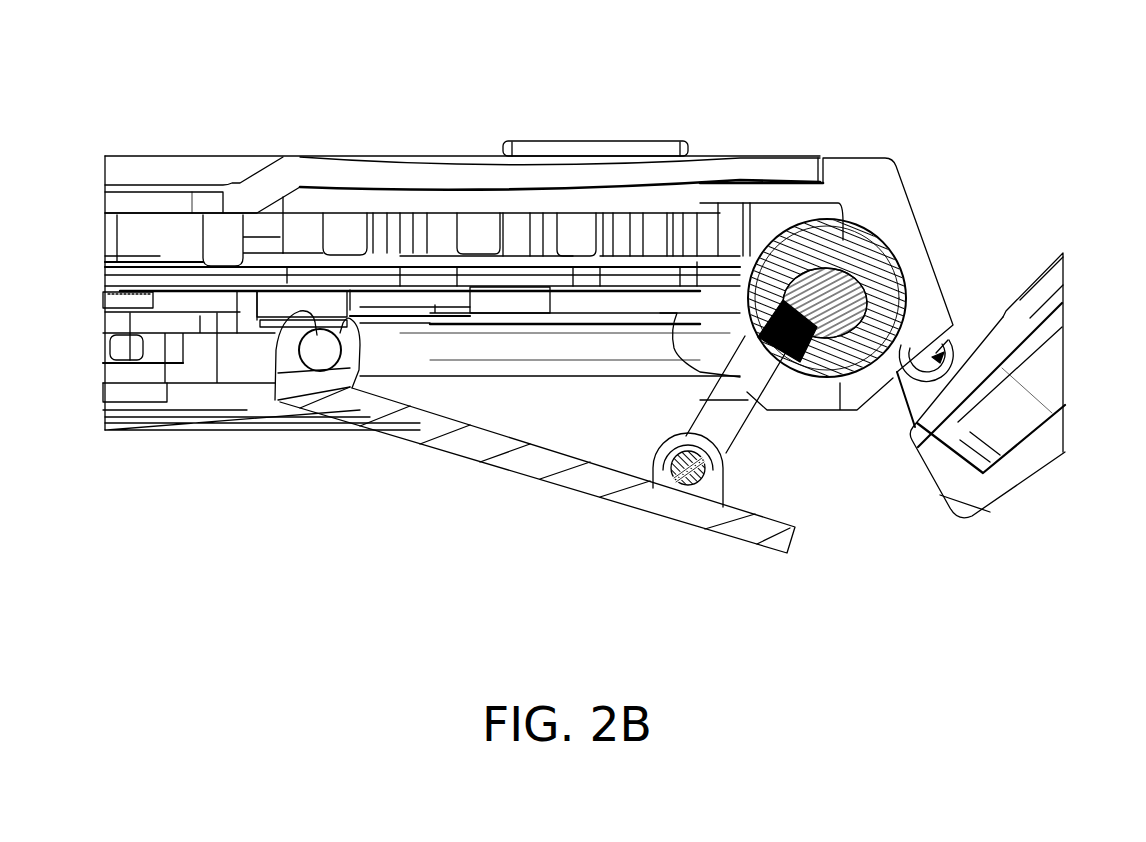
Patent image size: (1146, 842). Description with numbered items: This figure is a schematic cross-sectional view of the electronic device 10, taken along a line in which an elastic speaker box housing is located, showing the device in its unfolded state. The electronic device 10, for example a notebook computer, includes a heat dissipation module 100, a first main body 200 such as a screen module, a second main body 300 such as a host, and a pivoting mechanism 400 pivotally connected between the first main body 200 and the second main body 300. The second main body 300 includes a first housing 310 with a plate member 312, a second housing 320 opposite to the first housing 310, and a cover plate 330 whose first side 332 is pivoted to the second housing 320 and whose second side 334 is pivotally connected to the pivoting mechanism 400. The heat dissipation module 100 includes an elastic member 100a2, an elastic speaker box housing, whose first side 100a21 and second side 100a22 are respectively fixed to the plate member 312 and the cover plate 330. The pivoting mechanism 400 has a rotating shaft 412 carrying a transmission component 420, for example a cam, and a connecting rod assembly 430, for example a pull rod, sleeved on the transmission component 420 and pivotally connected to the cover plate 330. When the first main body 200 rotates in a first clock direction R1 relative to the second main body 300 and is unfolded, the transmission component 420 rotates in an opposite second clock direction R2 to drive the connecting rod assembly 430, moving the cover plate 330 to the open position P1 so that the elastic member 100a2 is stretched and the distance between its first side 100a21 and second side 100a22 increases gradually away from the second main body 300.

The electronic device 10 is at (1016, 596).
The heat dissipation module 100 is at (473, 344).
The elastic member 100a2 is at (497, 410).
The first side 100a21 is at (578, 308).
The second side 100a22 is at (410, 418).
The first main body 200 is at (1023, 470).
The second main body 300 is at (596, 316).
The first housing 310 is at (867, 188).
The plate member 312 is at (508, 302).
The second housing 320 is at (803, 400).
The cover plate 330 is at (597, 487).
The first side 332 is at (285, 351).
The second side 334 is at (732, 490).
The pivoting mechanism 400 is at (958, 392).
The rotating shaft 412 is at (856, 257).
The transmission component 420 is at (807, 243).
The connecting rod assembly 430 is at (722, 423).
The open position P1 is at (1092, 71).
The first clock direction R1 is at (1004, 127).
The second clock direction R2 is at (740, 310).